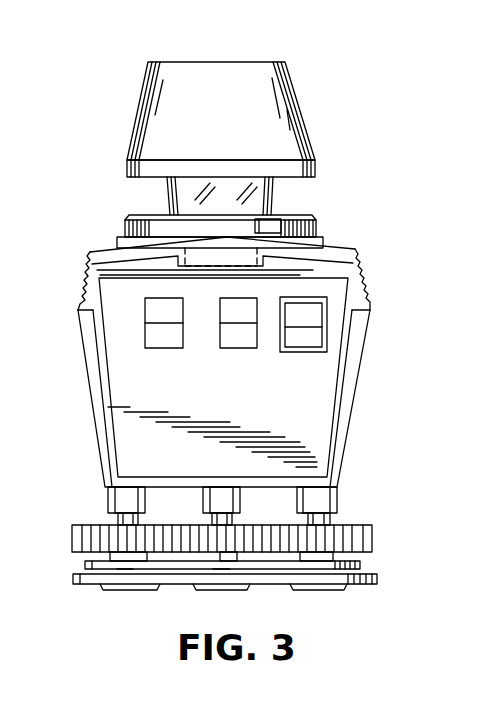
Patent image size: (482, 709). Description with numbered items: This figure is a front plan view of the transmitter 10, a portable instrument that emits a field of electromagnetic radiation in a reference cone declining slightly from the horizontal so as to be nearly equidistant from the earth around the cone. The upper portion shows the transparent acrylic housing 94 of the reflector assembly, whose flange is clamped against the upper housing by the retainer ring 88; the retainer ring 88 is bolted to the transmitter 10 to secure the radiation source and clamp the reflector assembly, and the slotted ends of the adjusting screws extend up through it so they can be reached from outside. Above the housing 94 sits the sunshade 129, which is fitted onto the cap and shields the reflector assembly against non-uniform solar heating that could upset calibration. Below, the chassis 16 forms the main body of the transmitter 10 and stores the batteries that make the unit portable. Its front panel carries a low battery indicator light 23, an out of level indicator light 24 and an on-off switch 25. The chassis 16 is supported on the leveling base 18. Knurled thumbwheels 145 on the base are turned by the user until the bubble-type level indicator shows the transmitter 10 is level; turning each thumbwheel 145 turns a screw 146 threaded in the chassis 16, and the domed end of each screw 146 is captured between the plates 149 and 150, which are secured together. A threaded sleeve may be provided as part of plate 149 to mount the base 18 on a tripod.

The transmitter 10 is at (92, 250).
The chassis 16 is at (88, 383).
The leveling base 18 is at (72, 523).
The low battery indicator light 23 is at (147, 310).
The out of level indicator light 24 is at (297, 310).
The on-off switch 25 is at (221, 310).
The retainer ring 88 is at (316, 224).
The housing 94 is at (274, 197).
The sunshade 129 is at (130, 140).
The knurled thumbwheel 145 is at (201, 525).
The screw 146 is at (117, 522).
The plate 149 is at (85, 563).
The plate 150 is at (75, 584).